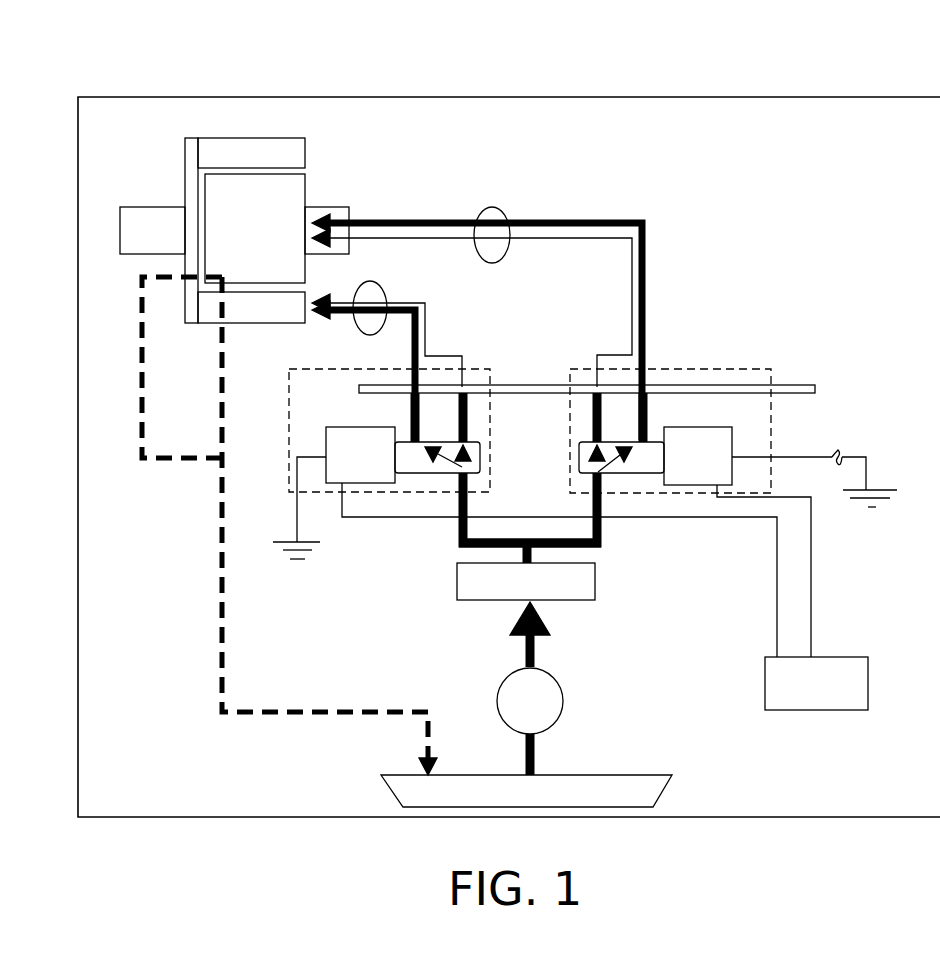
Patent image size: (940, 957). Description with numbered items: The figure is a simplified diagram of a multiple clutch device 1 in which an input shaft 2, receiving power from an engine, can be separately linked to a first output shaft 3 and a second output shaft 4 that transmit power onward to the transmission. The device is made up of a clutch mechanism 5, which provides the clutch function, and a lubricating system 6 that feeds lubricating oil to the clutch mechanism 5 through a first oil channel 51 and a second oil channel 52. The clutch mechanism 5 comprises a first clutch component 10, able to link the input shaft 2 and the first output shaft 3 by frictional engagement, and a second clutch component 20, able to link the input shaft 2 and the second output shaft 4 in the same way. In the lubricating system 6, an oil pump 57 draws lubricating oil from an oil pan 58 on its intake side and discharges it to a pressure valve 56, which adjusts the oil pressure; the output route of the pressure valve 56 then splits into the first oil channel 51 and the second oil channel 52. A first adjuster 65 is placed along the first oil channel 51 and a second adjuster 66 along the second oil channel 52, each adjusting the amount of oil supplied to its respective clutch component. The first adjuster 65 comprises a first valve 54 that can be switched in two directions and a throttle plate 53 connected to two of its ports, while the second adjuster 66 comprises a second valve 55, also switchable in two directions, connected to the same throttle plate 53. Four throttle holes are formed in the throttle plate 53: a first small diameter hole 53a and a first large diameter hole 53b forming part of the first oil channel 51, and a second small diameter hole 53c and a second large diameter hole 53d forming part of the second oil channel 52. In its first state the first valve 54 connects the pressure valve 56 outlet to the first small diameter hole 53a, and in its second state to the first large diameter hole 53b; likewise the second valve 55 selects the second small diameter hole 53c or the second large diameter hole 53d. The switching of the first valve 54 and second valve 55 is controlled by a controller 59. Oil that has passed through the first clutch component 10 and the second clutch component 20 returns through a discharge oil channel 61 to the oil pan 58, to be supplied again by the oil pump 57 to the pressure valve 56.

The multiple clutch device 1 is at (506, 93).
The input shaft 2 is at (130, 212).
The first output shaft 3 is at (347, 187).
The second output shaft 4 is at (332, 207).
The clutch mechanism 5 is at (266, 179).
The lubricating system 6 is at (523, 284).
The first clutch component 10 is at (218, 167).
The second clutch component 20 is at (250, 137).
The first oil channel 51 is at (426, 205).
The second oil channel 52 is at (432, 303).
The throttle plate 53 is at (780, 385).
The first small diameter hole 53a is at (592, 380).
The first large diameter hole 53b is at (652, 380).
The second small diameter hole 53c is at (472, 378).
The second large diameter hole 53d is at (404, 376).
The first valve 54 is at (727, 438).
The second valve 55 is at (332, 434).
The pressure valve 56 is at (590, 587).
The oil pump 57 is at (557, 698).
The oil pan 58 is at (637, 777).
The controller 59 is at (823, 705).
The discharge oil channel 61 is at (217, 545).
The first adjuster 65 is at (724, 368).
The second adjuster 66 is at (308, 368).